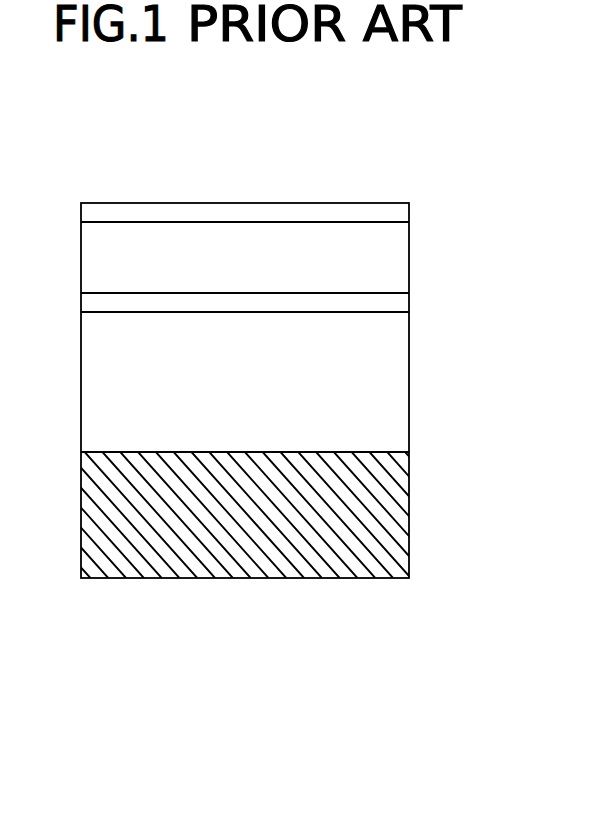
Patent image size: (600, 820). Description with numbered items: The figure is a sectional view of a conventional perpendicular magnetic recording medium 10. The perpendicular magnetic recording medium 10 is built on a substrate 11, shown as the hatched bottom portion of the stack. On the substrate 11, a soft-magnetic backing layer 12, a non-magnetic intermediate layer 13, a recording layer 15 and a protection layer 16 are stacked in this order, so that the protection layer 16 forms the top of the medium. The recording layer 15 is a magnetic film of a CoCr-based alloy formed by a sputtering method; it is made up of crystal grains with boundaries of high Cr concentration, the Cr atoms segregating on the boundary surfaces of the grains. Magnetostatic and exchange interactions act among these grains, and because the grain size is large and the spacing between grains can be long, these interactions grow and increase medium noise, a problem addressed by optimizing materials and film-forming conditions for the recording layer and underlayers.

The perpendicular magnetic recording medium 10 is at (100, 176).
The substrate 11 is at (409, 515).
The soft-magnetic backing layer 12 is at (409, 383).
The non-magnetic intermediate layer 13 is at (409, 305).
The recording layer 15 is at (409, 260).
The protection layer 16 is at (409, 215).